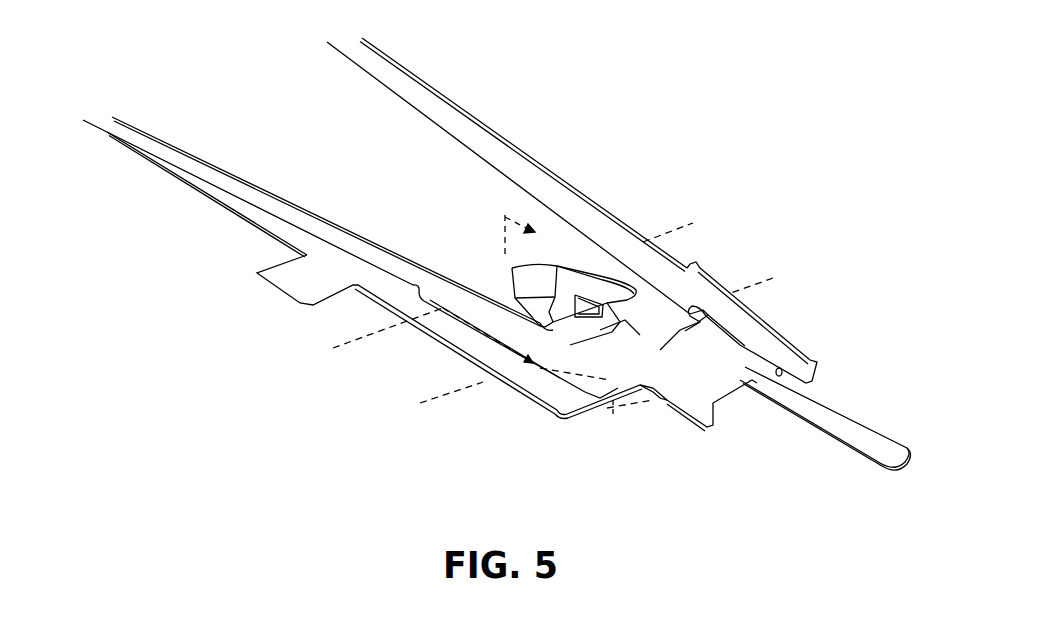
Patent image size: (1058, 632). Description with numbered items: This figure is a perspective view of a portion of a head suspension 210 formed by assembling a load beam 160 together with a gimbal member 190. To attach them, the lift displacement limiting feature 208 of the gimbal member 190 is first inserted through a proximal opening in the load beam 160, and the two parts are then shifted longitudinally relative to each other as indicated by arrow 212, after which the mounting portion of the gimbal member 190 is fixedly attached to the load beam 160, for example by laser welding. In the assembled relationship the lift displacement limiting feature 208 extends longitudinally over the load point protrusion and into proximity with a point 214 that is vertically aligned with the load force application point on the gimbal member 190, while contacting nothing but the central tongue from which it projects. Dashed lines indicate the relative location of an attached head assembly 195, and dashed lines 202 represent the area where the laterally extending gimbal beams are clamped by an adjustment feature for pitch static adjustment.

The load beam 160 is at (417, 157).
The gimbal member 190 is at (303, 283).
The head assembly 195 is at (652, 402).
The dashed lines (clamping area) 202 is at (773, 278).
The lift displacement limiting feature 208 is at (598, 300).
The head suspension 210 is at (728, 125).
The arrow 212 is at (505, 230).
The point 214 is at (607, 333).